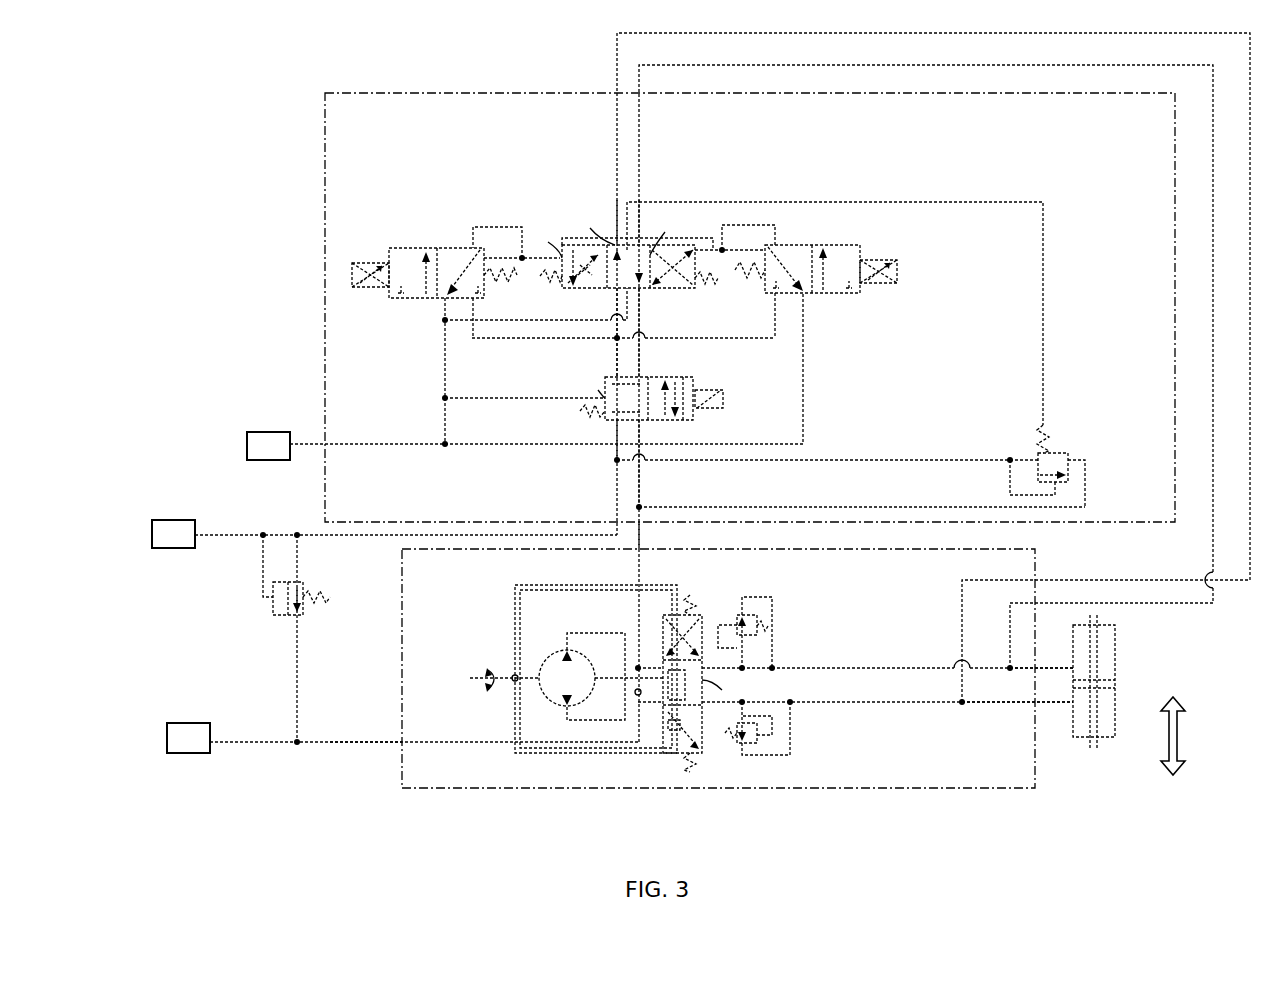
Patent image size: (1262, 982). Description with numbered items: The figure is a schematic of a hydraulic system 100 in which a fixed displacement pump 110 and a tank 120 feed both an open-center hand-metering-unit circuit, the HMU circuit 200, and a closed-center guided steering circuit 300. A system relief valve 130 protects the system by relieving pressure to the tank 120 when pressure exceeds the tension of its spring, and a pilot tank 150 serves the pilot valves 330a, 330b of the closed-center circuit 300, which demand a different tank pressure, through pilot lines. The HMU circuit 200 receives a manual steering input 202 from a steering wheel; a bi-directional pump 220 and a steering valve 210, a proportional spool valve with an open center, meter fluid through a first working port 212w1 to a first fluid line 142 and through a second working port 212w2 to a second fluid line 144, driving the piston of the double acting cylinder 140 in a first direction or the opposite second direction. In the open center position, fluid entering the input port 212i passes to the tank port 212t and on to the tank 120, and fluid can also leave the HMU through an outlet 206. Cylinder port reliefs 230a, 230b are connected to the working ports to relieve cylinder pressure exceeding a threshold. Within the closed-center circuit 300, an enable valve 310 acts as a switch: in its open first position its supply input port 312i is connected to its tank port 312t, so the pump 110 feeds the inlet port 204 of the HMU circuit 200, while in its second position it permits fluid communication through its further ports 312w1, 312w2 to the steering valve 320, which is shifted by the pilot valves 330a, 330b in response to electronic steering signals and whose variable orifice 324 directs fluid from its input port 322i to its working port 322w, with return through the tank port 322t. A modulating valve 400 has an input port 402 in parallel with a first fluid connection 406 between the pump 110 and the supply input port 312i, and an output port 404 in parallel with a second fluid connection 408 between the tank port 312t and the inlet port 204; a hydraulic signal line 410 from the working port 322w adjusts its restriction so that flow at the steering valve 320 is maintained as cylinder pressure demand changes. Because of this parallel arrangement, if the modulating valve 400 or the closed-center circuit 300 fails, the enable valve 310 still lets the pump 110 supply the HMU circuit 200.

The hydraulic system 100 is at (236, 74).
The fixed displacement pump 110 is at (185, 520).
The tank 120 is at (187, 723).
The system relief valve 130 is at (273, 605).
The hydraulic cylinder 140 is at (1115, 650).
The first fluid line 142 is at (1055, 668).
The second fluid line 144 is at (1060, 702).
The pilot tank 150 is at (270, 432).
The HMU circuit 200 is at (492, 788).
The manual steering input 202 is at (490, 688).
The inlet port 204 is at (640, 540).
The outlet 206 is at (378, 742).
The steering valve 210 is at (700, 615).
The input port 212i is at (655, 668).
The tank port 212t is at (650, 725).
The first working port 212w1 is at (720, 668).
The second working port 212w2 is at (705, 720).
The bi-directional pump 220 is at (515, 600).
The cylinder port relief 230a is at (757, 620).
The cylinder port relief 230b is at (760, 745).
The closed-center circuit 300 is at (437, 93).
The enable valve 310 is at (695, 415).
The supply input port 312i is at (617, 420).
The tank port 312t is at (639, 420).
The pilot valve first working port 312w1 is at (617, 377).
The pilot valve second working port 312w2 is at (639, 377).
The steering valve 320 is at (695, 245).
The input port 322i is at (617, 293).
The main valve tank port 322t is at (639, 293).
The working port 322w is at (640, 250).
The variable orifice 324 is at (565, 280).
The pilot valve 330a is at (825, 293).
The pilot valve 330b is at (425, 298).
The modulating valve 400 is at (1068, 480).
The input port 402 is at (1020, 466).
The output port 404 is at (1076, 466).
The first fluid connection 406 is at (615, 460).
The second fluid connection 408 is at (641, 507).
The hydraulic signal line 410 is at (977, 202).